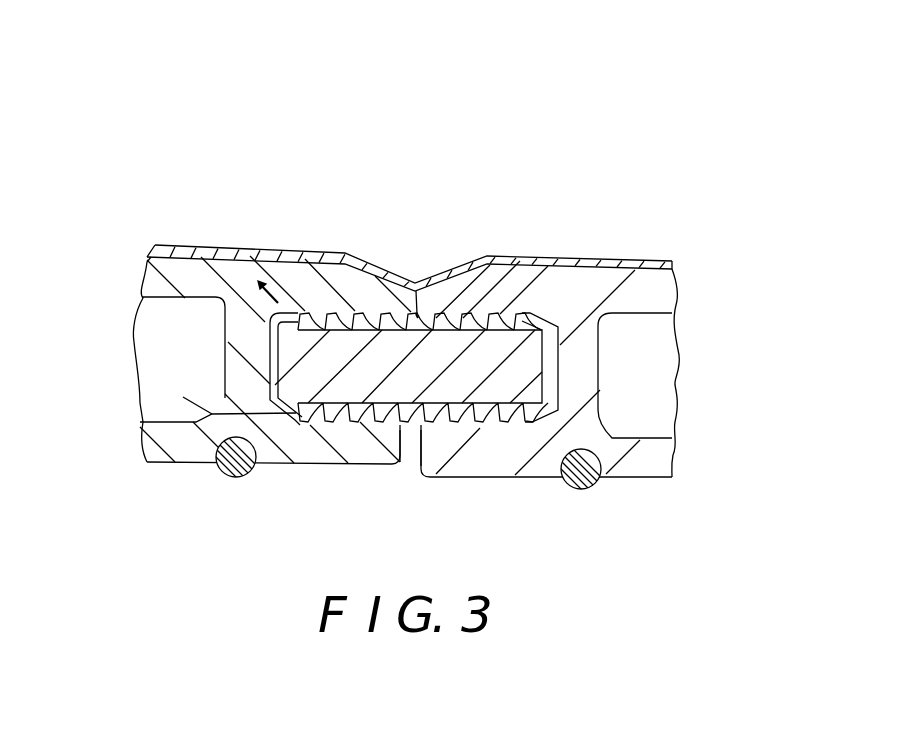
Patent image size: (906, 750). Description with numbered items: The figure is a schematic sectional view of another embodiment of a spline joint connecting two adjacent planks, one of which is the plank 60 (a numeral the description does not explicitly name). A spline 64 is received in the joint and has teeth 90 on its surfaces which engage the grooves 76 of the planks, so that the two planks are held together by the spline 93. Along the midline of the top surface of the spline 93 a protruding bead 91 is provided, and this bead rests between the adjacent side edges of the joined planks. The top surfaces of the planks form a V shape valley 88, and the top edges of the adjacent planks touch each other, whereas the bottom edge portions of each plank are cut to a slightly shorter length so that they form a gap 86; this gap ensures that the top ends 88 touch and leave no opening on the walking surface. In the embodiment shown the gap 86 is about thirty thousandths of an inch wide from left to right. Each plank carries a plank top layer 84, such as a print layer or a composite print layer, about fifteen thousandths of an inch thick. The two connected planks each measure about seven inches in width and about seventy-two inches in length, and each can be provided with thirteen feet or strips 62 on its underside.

The frame member 60 is at (645, 398).
The feet or strips 62 is at (565, 490).
The spline 64 is at (230, 250).
The grooves 76 is at (183, 397).
The plank top layer 84 is at (538, 258).
The gap 86 is at (408, 465).
The V shape valley 88 is at (416, 266).
The teeth 90 is at (364, 313).
The protruding bead 91 is at (418, 316).
The spline 93 is at (443, 377).